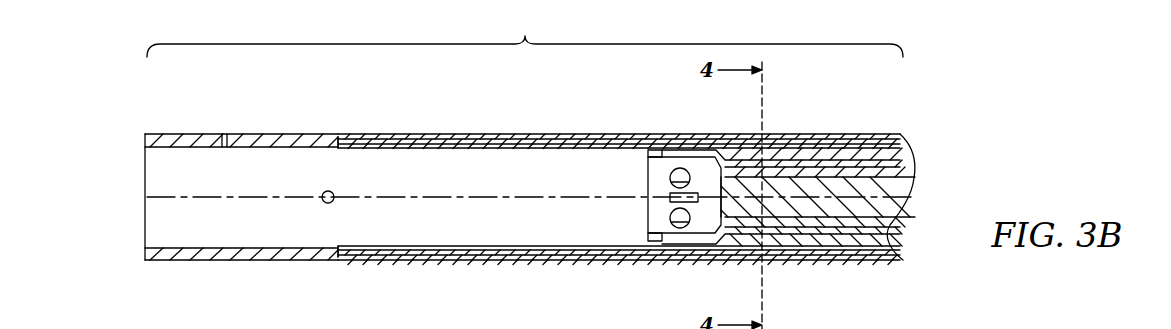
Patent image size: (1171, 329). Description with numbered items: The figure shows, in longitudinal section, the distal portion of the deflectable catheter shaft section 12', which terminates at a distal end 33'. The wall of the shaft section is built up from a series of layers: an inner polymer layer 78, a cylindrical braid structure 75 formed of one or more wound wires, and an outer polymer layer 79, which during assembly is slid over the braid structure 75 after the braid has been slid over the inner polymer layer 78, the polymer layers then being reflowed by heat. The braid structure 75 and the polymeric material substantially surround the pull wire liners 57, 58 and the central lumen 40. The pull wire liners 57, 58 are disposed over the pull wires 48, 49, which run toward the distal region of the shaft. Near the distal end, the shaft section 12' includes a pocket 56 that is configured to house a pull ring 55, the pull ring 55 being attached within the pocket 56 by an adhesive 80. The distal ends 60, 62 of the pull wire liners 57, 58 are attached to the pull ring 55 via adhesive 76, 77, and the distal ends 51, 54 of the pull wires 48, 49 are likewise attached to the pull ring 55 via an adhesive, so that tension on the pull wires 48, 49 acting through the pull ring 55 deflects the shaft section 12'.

The deflectable catheter shaft section 12' is at (525, 32).
The distal end 33' is at (120, 217).
The pocket 56 is at (197, 170).
The inner polymer layer 78 is at (350, 157).
The cylindrical braid structure 75 is at (397, 250).
The outer polymer layer 79 is at (442, 137).
The pull ring 55 is at (648, 177).
The distal end of pull wire 54 is at (650, 155).
The distal end of pull wire 51 is at (647, 238).
The adhesive 80 is at (663, 198).
The adhesive 76 is at (727, 158).
The adhesive 77 is at (723, 237).
The distal end of pull wire liner 62 is at (753, 165).
The distal end of pull wire liner 60 is at (752, 224).
The pull wire liner 58 is at (832, 175).
The pull wire liner 57 is at (825, 233).
The pull wire 49 is at (863, 167).
The pull wire 48 is at (857, 230).
The lumen 40 is at (888, 188).